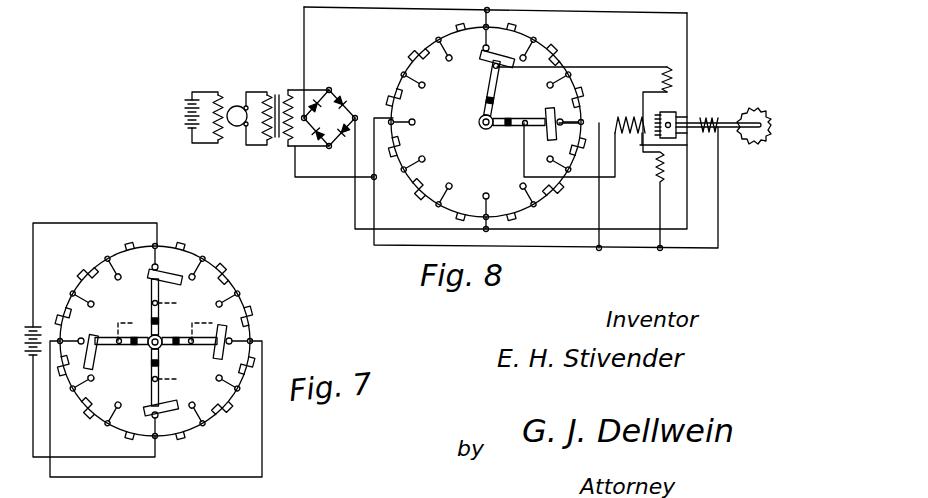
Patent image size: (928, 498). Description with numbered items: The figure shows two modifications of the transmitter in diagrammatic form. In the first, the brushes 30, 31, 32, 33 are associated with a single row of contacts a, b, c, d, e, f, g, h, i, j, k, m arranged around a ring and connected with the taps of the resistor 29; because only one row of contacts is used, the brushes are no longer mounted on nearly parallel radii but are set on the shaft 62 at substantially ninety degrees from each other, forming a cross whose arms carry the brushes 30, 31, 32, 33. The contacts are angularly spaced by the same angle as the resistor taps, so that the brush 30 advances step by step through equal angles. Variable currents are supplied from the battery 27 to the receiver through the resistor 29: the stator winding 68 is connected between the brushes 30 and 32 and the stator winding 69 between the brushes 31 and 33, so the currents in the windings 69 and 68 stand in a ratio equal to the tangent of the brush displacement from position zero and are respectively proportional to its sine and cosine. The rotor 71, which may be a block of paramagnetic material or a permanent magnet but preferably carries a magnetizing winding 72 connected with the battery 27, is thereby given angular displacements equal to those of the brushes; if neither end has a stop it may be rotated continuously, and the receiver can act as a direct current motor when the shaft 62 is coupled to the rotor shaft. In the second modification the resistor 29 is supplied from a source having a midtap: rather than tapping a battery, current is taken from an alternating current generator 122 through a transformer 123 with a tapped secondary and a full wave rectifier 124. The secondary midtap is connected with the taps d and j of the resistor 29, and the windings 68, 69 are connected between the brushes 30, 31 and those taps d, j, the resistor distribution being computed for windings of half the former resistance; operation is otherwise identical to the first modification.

In FIG. 7, the battery 27 is at (28, 352).
In FIG. 7, the resistor 29 is at (222, 278).
In FIG. 8, the resistor 29 is at (552, 57).
In FIG. 7, the brush 30 is at (151, 297).
In FIG. 8, the brush 30 is at (485, 82).
In FIG. 7, the brush 31 is at (202, 350).
In FIG. 8, the brush 31 is at (528, 122).
In FIG. 7, the brush 32 is at (152, 398).
In FIG. 7, the brush 33 is at (108, 350).
In FIG. 7, the shaft 62 is at (155, 350).
In FIG. 8, the shaft 62 is at (482, 129).
In FIG. 8, the stator winding 68 is at (675, 62).
In FIG. 8, the stator winding 69 is at (635, 108).
In FIG. 8, the rotor 71 is at (677, 112).
In FIG. 8, the magnetizing winding 72 is at (681, 124).
In FIG. 8, the alternating current generator 122 is at (237, 106).
In FIG. 8, the transformer 123 is at (279, 139).
In FIG. 8, the full wave rectifier 124 is at (335, 99).
In FIG. 7, the dial contact a is at (161, 253).
In FIG. 7, the dial contact b is at (201, 263).
In FIG. 7, the dial contact c is at (231, 296).
In FIG. 7, the tap d is at (244, 334).
In FIG. 8, the tap d is at (574, 115).
In FIG. 7, the dial contact e is at (233, 385).
In FIG. 7, the dial contact f is at (201, 419).
In FIG. 7, the tap g is at (160, 434).
In FIG. 7, the dial contact h is at (109, 421).
In FIG. 7, the dial contact i is at (77, 387).
In FIG. 7, the tap j is at (64, 335).
In FIG. 8, the tap j is at (397, 111).
In FIG. 7, the dial contact k is at (74, 294).
In FIG. 7, the dial contact m is at (108, 259).